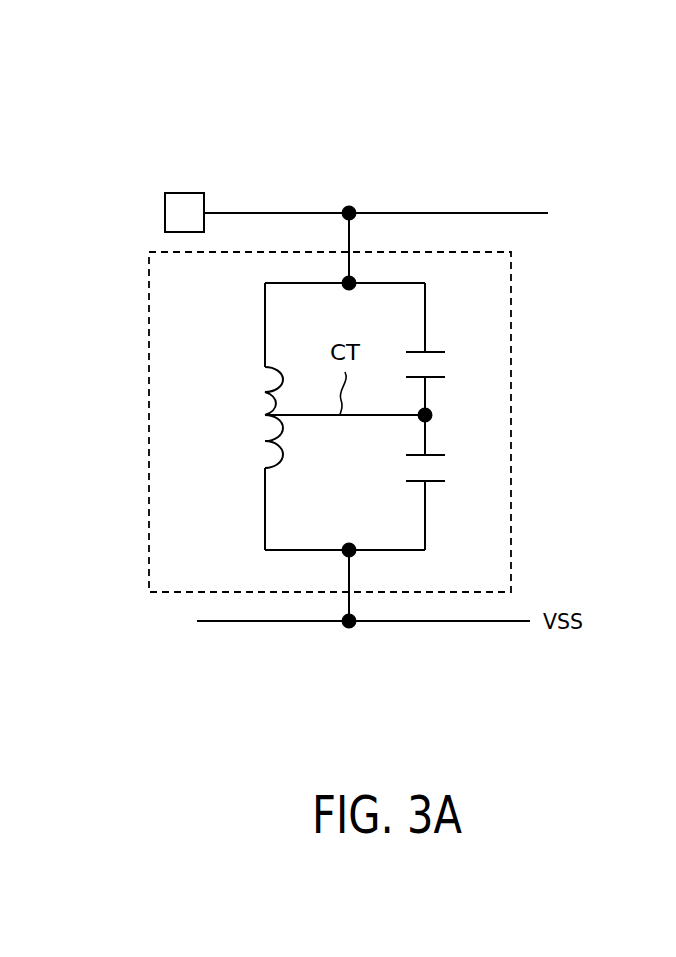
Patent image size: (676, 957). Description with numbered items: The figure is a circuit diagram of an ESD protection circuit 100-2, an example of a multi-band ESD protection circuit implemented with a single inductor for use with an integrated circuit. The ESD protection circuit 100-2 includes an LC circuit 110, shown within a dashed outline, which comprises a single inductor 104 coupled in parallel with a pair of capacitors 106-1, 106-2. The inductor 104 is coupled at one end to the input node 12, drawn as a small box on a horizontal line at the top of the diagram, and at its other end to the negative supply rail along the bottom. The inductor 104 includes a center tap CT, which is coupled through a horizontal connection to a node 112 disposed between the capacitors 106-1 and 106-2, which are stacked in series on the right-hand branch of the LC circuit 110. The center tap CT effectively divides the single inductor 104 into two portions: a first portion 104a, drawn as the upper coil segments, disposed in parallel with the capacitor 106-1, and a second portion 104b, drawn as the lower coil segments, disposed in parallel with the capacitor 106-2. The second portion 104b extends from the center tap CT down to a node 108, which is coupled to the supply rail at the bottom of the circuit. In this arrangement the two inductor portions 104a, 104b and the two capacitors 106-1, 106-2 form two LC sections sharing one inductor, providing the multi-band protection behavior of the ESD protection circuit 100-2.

The ESD protection circuit 100-2 is at (521, 182).
The input node 12 is at (165, 212).
The LC circuit 110 is at (512, 318).
The single inductor 104 is at (222, 420).
The first portion 104a is at (274, 382).
The second portion 104b is at (270, 443).
The capacitor 106-1 is at (443, 352).
The capacitor 106-2 is at (443, 481).
The node 112 is at (432, 415).
The node 108 is at (349, 548).